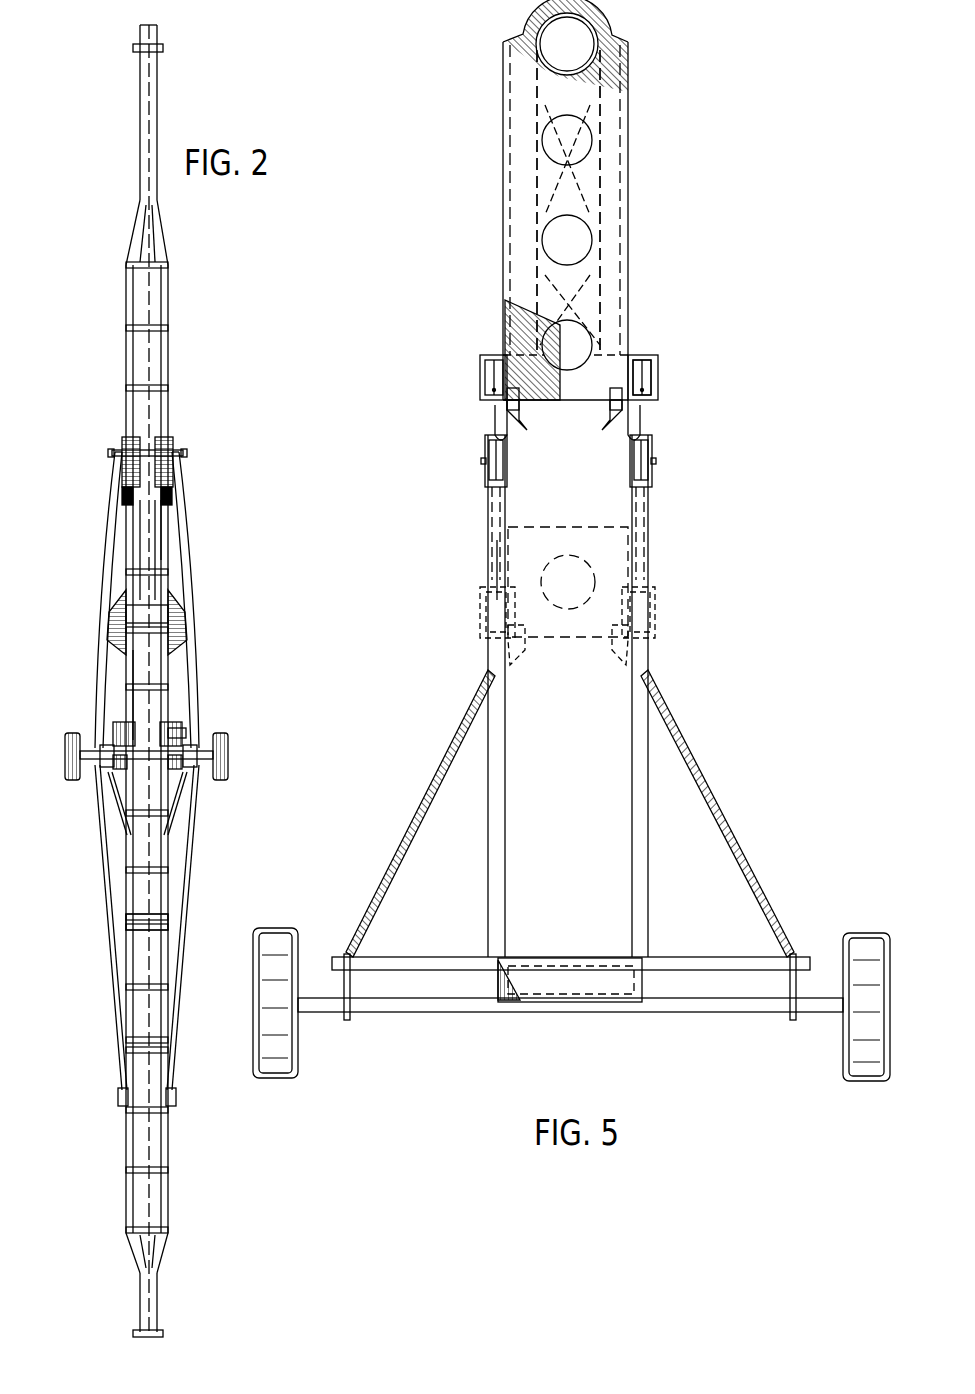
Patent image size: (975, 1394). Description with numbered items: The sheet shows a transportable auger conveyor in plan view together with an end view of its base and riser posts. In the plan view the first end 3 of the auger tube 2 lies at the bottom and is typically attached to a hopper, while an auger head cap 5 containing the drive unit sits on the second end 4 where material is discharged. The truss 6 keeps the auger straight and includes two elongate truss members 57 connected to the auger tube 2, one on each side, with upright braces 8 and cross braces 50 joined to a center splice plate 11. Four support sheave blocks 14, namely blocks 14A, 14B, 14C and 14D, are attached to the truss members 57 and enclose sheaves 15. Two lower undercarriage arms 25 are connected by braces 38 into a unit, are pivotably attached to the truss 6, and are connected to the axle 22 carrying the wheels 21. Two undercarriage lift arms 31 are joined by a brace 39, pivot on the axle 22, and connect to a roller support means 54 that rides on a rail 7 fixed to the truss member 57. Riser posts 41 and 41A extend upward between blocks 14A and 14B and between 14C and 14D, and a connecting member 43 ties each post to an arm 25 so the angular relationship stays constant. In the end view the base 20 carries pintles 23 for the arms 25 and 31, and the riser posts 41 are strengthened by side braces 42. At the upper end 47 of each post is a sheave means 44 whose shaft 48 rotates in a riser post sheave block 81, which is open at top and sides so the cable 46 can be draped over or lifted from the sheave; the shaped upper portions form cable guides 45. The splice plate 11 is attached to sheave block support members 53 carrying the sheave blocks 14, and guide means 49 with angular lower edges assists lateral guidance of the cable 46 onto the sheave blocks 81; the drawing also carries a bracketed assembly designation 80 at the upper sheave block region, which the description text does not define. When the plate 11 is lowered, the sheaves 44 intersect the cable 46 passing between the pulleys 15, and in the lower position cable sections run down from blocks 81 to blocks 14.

In FIG. 2, the auger tube 2 is at (148, 545).
In FIG. 5, the auger tube 2 is at (595, 28).
In FIG. 2, the first end of the auger tube 3 is at (148, 1300).
In FIG. 2, the second end of the auger tube 4 is at (148, 80).
In FIG. 2, the auger head cap 5 is at (155, 35).
In FIG. 2, the truss 6 is at (165, 1140).
In FIG. 2, the rail 7 is at (165, 530).
In FIG. 2, the upright braces 8 is at (160, 690).
In FIG. 5, the upright braces 8 is at (535, 175).
In FIG. 5, the center splice plate 11 is at (613, 207).
In FIG. 5, the support sheave blocks 14 is at (640, 357).
In FIG. 2, the support sheave block 14A is at (123, 762).
In FIG. 2, the support sheave block 14B is at (120, 740).
In FIG. 2, the support sheave block 14C is at (175, 770).
In FIG. 2, the support sheave block 14D is at (172, 733).
In FIG. 5, the sheaves 15 is at (655, 372).
In FIG. 5, the base 20 is at (716, 1020).
In FIG. 2, the wheels 21 is at (225, 760).
In FIG. 5, the wheels 21 is at (272, 1050).
In FIG. 2, the axle 22 is at (205, 768).
In FIG. 5, the axle 22 is at (458, 1008).
In FIG. 5, the pintles 23 is at (795, 958).
In FIG. 2, the lower undercarriage arms 25 is at (102, 870).
In FIG. 2, the undercarriage lift arms 31 is at (115, 512).
In FIG. 2, the braces 38 is at (170, 920).
In FIG. 2, the brace 39 is at (175, 610).
In FIG. 2, the riser post 41 is at (110, 770).
In FIG. 5, the riser post 41 is at (498, 900).
In FIG. 2, the riser post 41A is at (180, 752).
In FIG. 5, the side braces 42 is at (403, 878).
In FIG. 2, the connecting member 43 is at (183, 805).
In FIG. 5, the riser post sheave means 44 is at (490, 455).
In FIG. 5, the cable guides 45 is at (630, 440).
In FIG. 5, the cable 46 is at (497, 392).
In FIG. 5, the upper end of riser post 47 is at (495, 497).
In FIG. 5, the shaft 48 is at (488, 467).
In FIG. 5, the guide means 49 is at (525, 410).
In FIG. 5, the cross braces 50 is at (540, 165).
In FIG. 5, the sheave block support members 53 is at (505, 355).
In FIG. 2, the roller support means 54 is at (170, 440).
In FIG. 2, the elongate truss members 57 is at (165, 962).
In FIG. 5, the roller assembly 80 is at (735, 350).
In FIG. 5, the riser post sheave block 81 is at (640, 475).